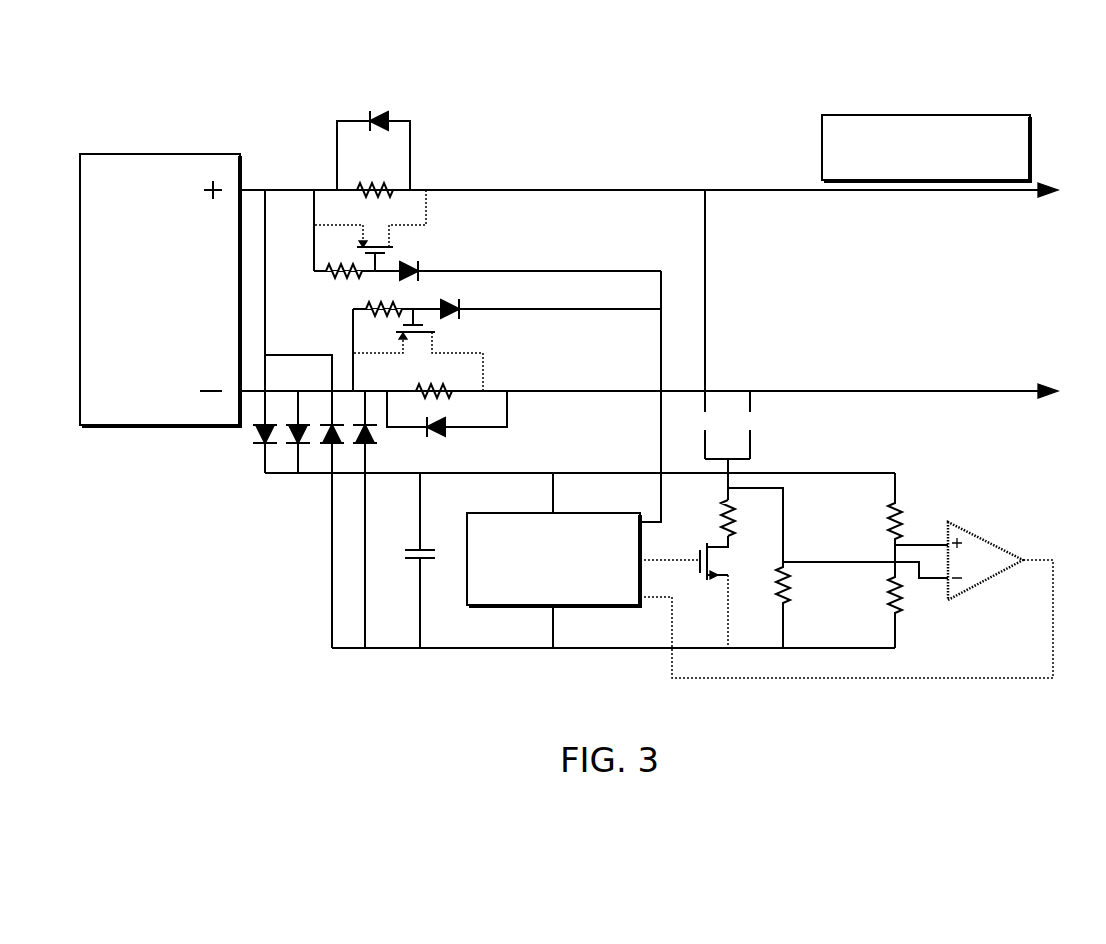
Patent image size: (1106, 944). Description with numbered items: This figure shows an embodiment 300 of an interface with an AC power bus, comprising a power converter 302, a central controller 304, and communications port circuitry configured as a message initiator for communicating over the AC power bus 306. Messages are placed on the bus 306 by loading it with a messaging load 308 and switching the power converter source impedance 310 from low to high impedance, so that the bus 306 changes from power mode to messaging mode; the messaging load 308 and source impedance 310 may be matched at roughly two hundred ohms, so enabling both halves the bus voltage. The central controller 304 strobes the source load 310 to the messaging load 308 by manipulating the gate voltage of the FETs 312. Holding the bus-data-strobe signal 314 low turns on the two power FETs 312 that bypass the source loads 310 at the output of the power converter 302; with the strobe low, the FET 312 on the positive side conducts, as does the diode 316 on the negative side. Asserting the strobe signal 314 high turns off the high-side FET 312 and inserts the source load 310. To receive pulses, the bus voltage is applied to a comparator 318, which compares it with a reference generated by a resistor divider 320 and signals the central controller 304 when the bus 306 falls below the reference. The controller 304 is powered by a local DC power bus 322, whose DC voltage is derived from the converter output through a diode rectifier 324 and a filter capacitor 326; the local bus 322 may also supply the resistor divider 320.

The embodiment 300 is at (262, 56).
The power converter 302 is at (160, 290).
The central controller 304 is at (760, 595).
The AC power bus 306 is at (757, 187).
The messaging load 308 is at (722, 520).
The source impedance 310 is at (392, 181).
The FETs 312 is at (362, 236).
The bus-data-strobe signal 314 is at (660, 440).
The diode 316 is at (379, 115).
The comparator 318 is at (980, 585).
The resistor divider 320 is at (884, 580).
The local DC power bus 322 is at (815, 473).
The diode rectifier 324 is at (272, 500).
The filter capacitor 326 is at (416, 548).